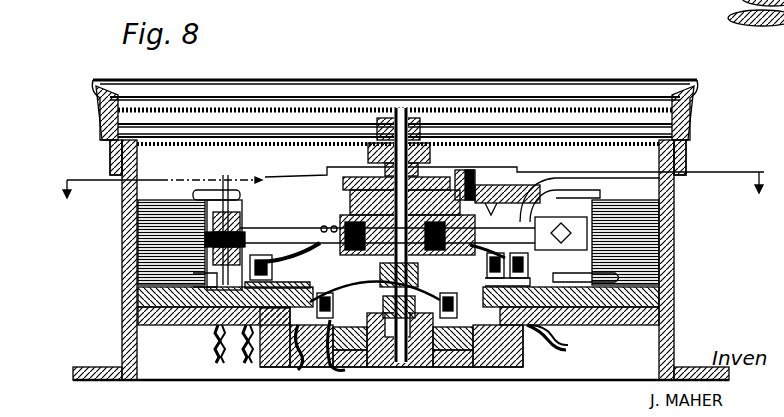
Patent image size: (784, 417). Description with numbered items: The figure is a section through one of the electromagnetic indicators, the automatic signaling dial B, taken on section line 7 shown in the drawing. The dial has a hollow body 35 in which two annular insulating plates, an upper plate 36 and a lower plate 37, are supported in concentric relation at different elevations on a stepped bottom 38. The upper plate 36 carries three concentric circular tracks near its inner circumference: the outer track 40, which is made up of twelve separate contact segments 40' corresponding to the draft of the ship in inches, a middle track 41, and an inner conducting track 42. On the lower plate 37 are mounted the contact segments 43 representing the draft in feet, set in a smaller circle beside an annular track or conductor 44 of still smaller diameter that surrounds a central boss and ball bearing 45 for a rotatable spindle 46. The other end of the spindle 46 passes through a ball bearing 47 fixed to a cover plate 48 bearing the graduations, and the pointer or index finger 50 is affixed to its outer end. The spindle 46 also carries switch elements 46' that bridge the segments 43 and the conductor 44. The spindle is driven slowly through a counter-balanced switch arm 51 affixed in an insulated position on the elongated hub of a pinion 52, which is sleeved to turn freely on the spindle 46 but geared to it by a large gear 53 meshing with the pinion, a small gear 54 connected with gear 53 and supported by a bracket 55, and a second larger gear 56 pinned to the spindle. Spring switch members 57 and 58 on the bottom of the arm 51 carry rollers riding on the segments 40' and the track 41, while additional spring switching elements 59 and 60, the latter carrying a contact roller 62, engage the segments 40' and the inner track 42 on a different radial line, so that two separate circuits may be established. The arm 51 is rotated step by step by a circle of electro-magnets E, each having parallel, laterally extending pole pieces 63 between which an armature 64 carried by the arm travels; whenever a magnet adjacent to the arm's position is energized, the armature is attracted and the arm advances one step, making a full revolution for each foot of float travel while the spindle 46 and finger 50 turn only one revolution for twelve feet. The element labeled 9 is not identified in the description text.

The automatic signaling dial B is at (293, 108).
The electro-magnet E is at (137, 226).
The section line 7 is at (412, 174).
The plate 9 is at (235, 192).
The hollow body 35 is at (662, 276).
The upper insulating plate 36 is at (662, 298).
The lower insulating plate 37 is at (493, 328).
The stepped bottom 38 is at (602, 322).
The outer circular track 40 is at (578, 268).
The contact segment 40' is at (277, 273).
The circular track 41 is at (545, 336).
The inner conducting track 42 is at (490, 283).
The contact segment 43 is at (468, 345).
The annular track or conductor 44 is at (437, 348).
The central boss and ball bearing 45 is at (372, 350).
The rotatable spindle 46 is at (400, 222).
The switch elements 46' is at (383, 297).
The ball bearing 47 is at (368, 155).
The cover plate 48 is at (415, 165).
The pointer or index finger 50 is at (478, 130).
The counter-balanced switch arm 51 is at (312, 233).
The pinion 52 is at (385, 198).
The large gear 53 is at (501, 194).
The small gear 54 is at (481, 185).
The bracket 55 is at (577, 178).
The second larger gear 56 is at (440, 185).
The spring switch member 57 is at (270, 262).
The spring switch member 58 is at (478, 222).
The spring switching element 59 is at (298, 260).
The spring switching element 60 is at (483, 270).
The contact roller 62 is at (433, 278).
The pole piece 63 is at (237, 183).
The armature 64 is at (245, 213).